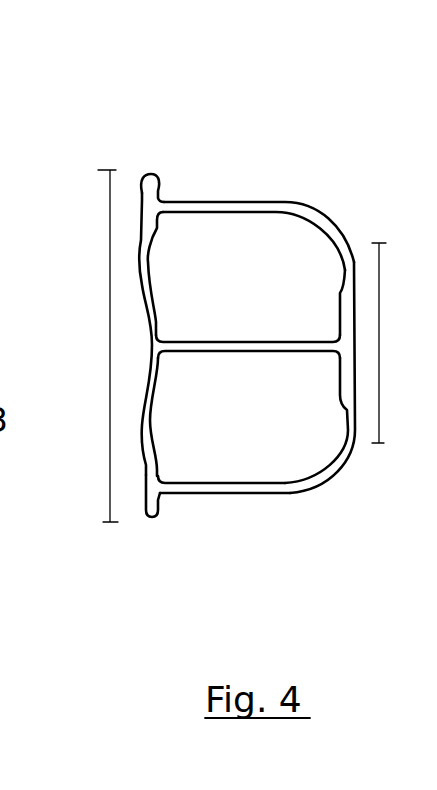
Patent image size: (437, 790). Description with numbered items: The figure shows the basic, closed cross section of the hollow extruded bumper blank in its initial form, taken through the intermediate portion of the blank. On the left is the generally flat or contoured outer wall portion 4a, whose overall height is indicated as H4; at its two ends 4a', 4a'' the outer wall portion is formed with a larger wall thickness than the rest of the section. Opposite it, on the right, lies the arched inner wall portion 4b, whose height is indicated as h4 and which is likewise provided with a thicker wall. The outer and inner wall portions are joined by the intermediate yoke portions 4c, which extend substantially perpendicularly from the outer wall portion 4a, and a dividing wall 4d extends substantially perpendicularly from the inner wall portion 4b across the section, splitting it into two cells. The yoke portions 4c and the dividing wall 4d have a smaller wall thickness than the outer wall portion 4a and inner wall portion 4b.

The outer wall portion 4a is at (106, 414).
The end of outer wall portion 4a' is at (168, 550).
The end of outer wall portion 4a'' is at (118, 120).
The inner wall portion 4b is at (353, 253).
The yoke portions 4c is at (278, 203).
The dividing wall 4d is at (255, 337).
The height of outer wall portion H4 is at (86, 346).
The height of inner wall portion h4 is at (401, 343).